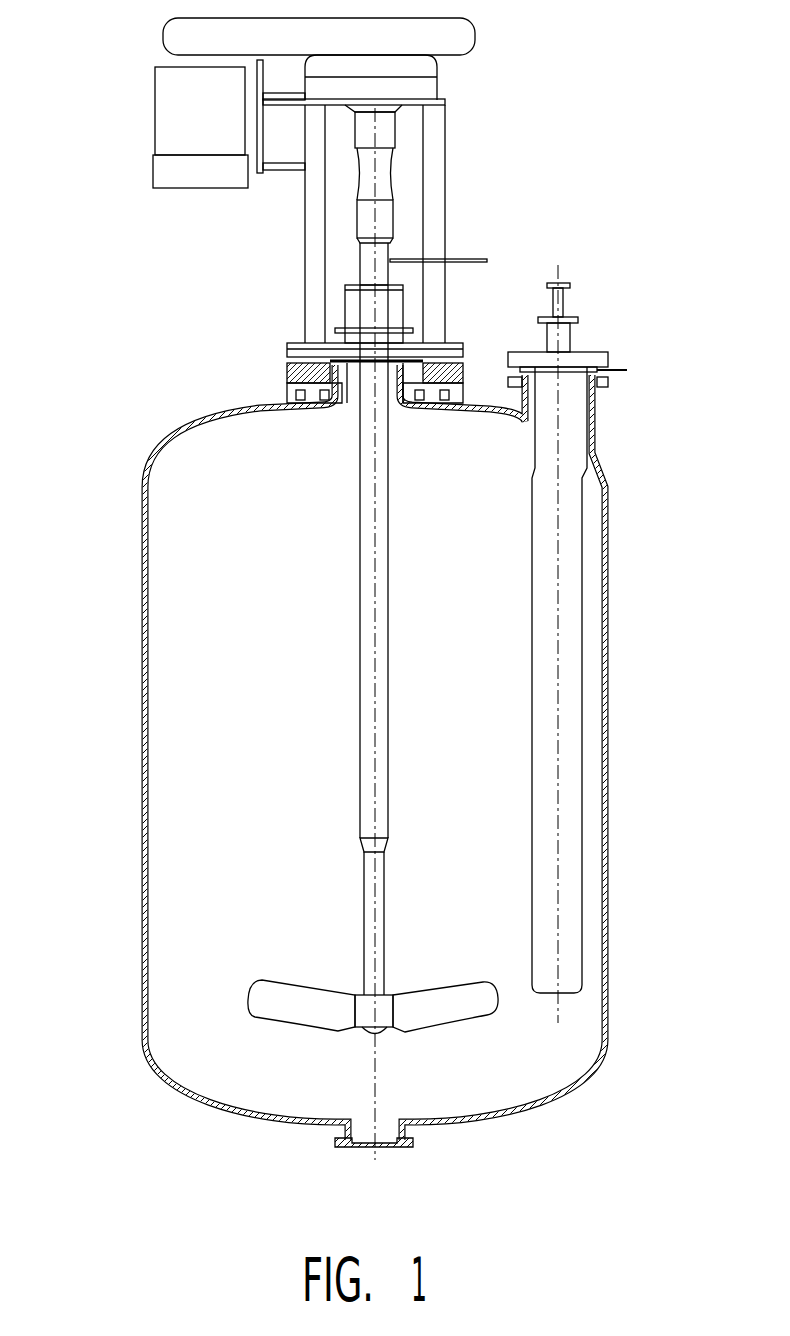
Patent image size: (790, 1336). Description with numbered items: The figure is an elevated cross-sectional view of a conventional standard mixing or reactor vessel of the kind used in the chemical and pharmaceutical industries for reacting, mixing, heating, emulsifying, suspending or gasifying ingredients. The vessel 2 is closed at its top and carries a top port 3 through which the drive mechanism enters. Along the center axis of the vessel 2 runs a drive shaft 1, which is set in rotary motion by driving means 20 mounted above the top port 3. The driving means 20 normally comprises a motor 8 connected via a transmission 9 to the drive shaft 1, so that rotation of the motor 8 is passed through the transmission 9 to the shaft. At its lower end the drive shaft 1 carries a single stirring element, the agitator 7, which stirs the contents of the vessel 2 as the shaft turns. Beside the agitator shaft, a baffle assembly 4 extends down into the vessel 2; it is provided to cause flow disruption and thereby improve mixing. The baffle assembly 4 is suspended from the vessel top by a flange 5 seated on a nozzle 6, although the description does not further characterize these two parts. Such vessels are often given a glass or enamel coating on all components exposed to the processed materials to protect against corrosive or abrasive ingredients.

The driving means 20 is at (550, 52).
The drive shaft 1 is at (370, 630).
The vessel 2 is at (608, 948).
The top port 3 is at (397, 407).
The baffle assembly 4 is at (572, 737).
The thermowell flange 5 is at (593, 352).
The thermowell nozzle 6 is at (593, 413).
The agitator 7 is at (465, 1012).
The motor 8 is at (180, 129).
The transmission 9 is at (380, 138).